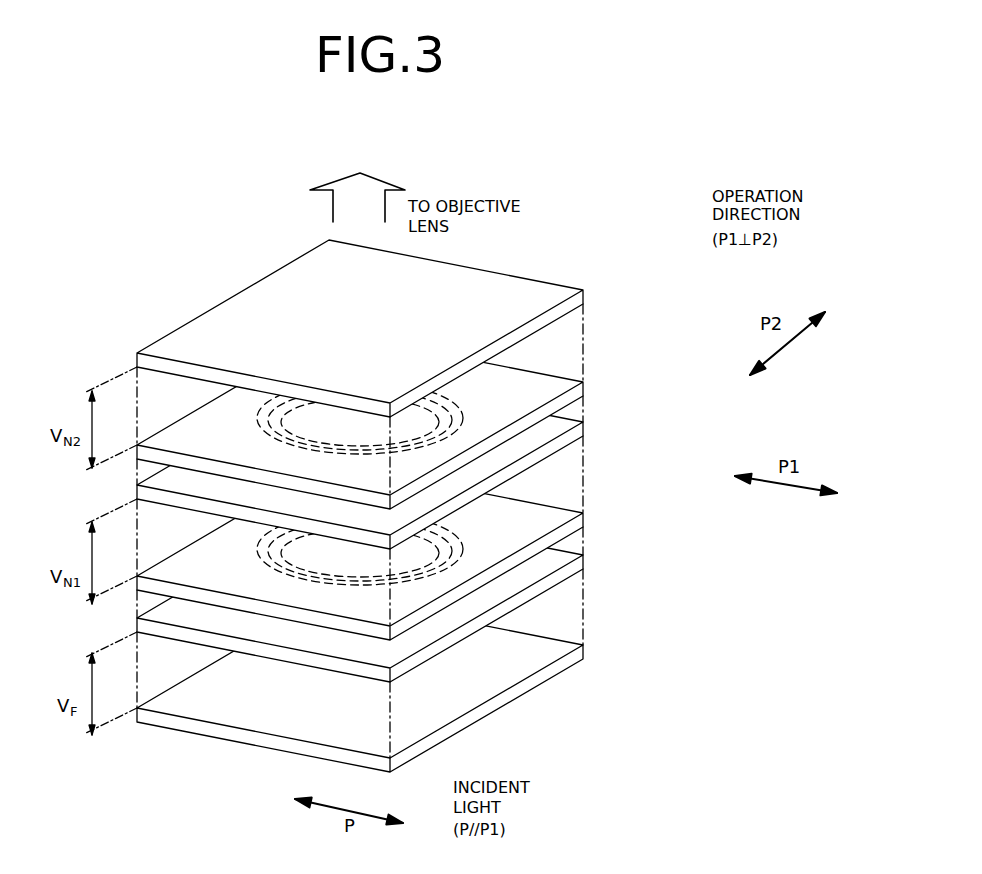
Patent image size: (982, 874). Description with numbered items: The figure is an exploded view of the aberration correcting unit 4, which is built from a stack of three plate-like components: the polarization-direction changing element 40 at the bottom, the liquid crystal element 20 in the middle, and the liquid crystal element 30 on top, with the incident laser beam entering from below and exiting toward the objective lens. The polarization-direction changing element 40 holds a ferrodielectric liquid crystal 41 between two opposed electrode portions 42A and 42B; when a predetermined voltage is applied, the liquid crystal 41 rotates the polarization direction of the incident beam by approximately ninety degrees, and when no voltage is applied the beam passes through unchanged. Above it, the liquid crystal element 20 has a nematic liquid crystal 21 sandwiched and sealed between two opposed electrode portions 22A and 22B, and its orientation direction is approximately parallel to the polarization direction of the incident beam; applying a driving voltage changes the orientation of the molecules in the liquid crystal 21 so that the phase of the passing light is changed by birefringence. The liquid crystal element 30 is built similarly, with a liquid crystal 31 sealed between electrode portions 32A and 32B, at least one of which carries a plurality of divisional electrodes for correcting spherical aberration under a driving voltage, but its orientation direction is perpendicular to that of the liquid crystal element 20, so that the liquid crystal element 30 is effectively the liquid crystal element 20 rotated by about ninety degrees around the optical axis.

The aberration correcting unit 4 is at (196, 280).
The liquid crystal element 30 is at (422, 374).
The liquid crystal 31 is at (586, 346).
The electrode portion 32A is at (586, 387).
The electrode portion 32B is at (586, 293).
The liquid crystal element 20 is at (422, 506).
The liquid crystal 21 is at (586, 479).
The electrode portion 22A is at (586, 516).
The electrode portion 22B is at (586, 425).
The polarization-direction changing element 40 is at (422, 638).
The liquid crystal 41 is at (586, 610).
The electrode portion 42A is at (586, 648).
The electrode portion 42B is at (586, 558).